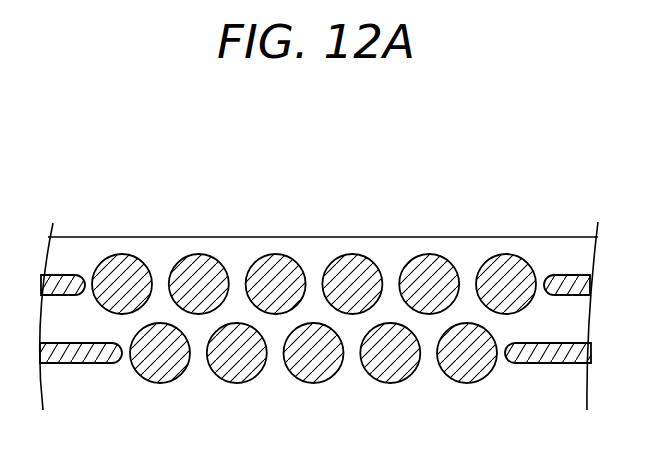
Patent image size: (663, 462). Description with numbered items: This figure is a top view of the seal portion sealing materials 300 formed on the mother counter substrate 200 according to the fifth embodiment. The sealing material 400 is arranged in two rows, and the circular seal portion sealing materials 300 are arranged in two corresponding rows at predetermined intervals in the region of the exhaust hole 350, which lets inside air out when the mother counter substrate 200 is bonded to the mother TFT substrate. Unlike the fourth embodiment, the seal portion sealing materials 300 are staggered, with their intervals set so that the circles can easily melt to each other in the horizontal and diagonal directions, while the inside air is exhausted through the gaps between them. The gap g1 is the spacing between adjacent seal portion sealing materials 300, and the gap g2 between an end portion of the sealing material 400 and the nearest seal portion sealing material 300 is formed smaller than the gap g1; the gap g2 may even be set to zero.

The mother counter substrate 200 is at (387, 238).
The seal portion sealing materials 300 is at (274, 256).
The exhaust hole 350 is at (237, 280).
The sealing material 400 is at (568, 275).
The gap between the seal portion sealing materials g1 is at (169, 270).
The gap between an end portion of the sealing material and the seal portion sealing g2 is at (85, 275).